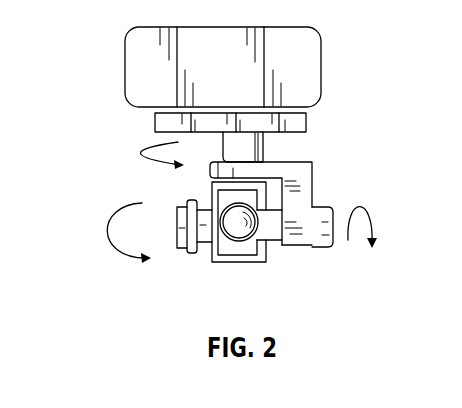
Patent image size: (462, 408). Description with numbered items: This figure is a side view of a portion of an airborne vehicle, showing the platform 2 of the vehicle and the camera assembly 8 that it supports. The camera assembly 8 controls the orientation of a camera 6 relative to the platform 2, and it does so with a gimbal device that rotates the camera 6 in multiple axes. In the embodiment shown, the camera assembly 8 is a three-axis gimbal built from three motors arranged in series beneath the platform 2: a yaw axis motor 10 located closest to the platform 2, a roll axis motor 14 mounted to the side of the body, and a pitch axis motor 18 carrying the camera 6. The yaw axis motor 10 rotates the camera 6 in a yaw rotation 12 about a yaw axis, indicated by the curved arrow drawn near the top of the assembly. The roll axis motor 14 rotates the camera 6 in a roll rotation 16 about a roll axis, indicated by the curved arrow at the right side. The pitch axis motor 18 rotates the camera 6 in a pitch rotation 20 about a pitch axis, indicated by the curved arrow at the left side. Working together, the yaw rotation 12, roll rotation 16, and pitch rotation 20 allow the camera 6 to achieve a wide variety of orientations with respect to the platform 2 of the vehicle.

The platform 2 is at (225, 27).
The camera 6 is at (192, 253).
The camera assembly 8 is at (312, 193).
The yaw axis motor 10 is at (262, 137).
The yaw rotation 12 is at (143, 152).
The roll axis motor 14 is at (318, 250).
The roll rotation 16 is at (372, 222).
The pitch axis motor 18 is at (237, 262).
The pitch rotation 20 is at (108, 232).